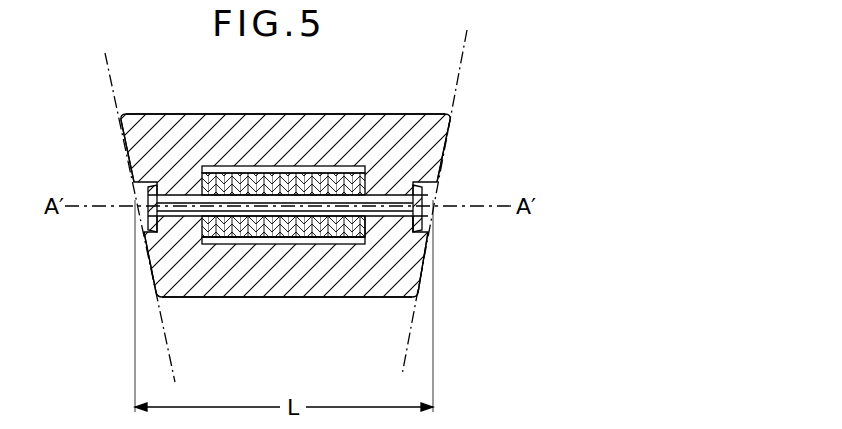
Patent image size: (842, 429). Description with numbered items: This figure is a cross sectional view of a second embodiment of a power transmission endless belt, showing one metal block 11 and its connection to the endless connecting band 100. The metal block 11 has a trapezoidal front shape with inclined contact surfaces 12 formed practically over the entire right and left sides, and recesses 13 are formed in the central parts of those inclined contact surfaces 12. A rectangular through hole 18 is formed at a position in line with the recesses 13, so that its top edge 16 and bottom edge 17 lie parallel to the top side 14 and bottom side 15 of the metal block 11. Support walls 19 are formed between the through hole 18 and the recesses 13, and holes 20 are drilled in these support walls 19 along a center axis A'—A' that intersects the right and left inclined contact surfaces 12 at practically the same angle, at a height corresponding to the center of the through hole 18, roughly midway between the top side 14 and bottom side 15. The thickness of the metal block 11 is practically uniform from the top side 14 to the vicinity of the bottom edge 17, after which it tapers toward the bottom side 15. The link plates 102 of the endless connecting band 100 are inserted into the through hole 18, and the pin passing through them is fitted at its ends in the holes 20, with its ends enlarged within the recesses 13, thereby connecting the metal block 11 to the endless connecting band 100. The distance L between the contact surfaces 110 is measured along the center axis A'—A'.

The metal block 11 is at (293, 113).
The inclined contact surfaces 12 is at (122, 152).
The recesses 13 is at (135, 192).
The top side 14 is at (165, 113).
The bottom side 15 is at (218, 300).
The top edge 16 is at (260, 168).
The bottom edge 17 is at (243, 245).
The through hole 18 is at (335, 172).
The support walls 19 is at (394, 226).
The holes 20 is at (172, 196).
The endless connecting band 100 is at (333, 238).
The link plates 102 is at (286, 240).
The contact surfaces 110 is at (113, 82).